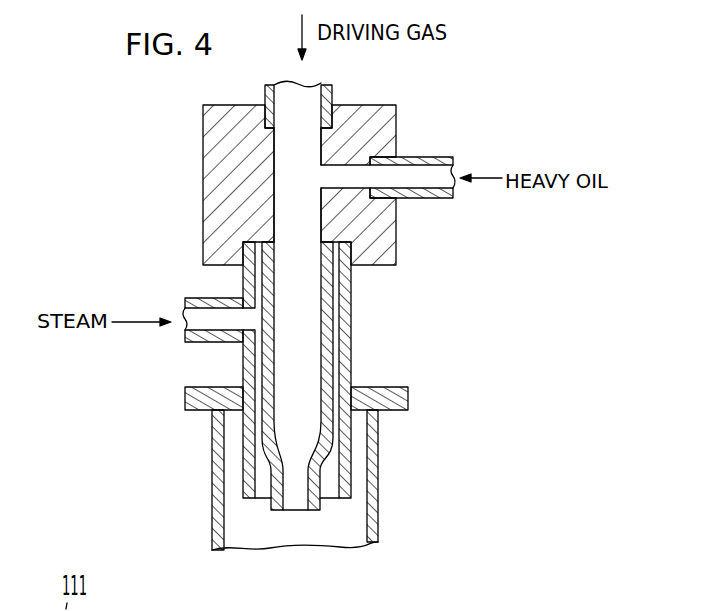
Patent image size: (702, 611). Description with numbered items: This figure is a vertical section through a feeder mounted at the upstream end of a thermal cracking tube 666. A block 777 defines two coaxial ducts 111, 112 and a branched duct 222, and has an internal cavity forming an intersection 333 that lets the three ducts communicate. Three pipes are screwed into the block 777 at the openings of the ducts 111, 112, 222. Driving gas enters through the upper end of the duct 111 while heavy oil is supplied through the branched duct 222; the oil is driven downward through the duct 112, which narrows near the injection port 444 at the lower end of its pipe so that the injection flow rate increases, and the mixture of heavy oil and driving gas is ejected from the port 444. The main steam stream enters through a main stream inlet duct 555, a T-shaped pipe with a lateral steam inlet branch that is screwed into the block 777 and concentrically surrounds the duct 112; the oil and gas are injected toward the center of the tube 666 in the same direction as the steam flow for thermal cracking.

The duct 111 is at (308, 105).
The branched duct 222 is at (420, 170).
The intersection 333 is at (300, 174).
The block 777 is at (202, 229).
The duct 112 is at (295, 354).
The main stream inlet duct 555 is at (197, 320).
The cracking tube 666 is at (260, 532).
The injection port 444 is at (293, 513).